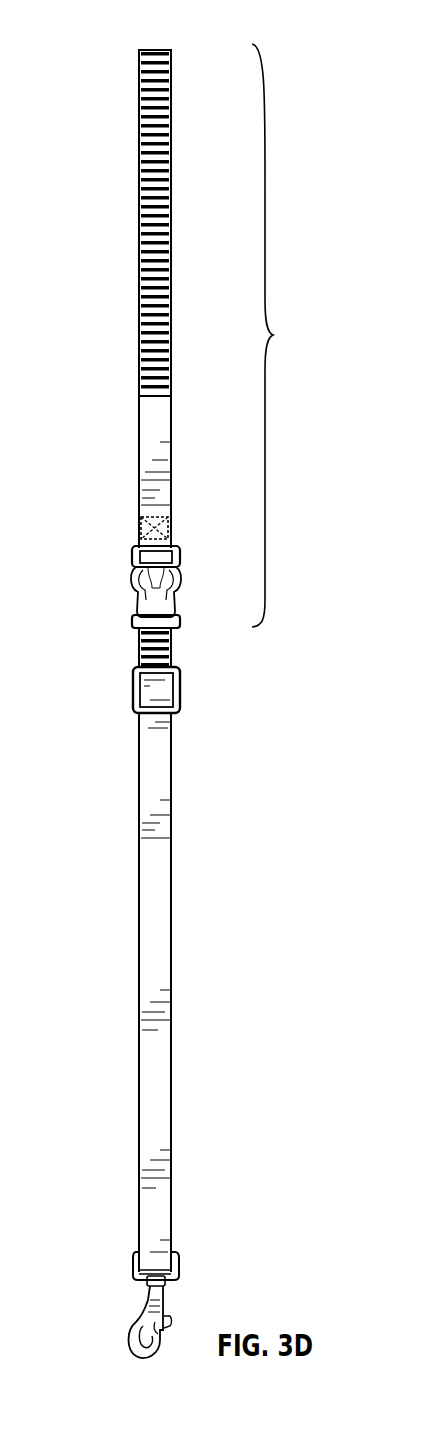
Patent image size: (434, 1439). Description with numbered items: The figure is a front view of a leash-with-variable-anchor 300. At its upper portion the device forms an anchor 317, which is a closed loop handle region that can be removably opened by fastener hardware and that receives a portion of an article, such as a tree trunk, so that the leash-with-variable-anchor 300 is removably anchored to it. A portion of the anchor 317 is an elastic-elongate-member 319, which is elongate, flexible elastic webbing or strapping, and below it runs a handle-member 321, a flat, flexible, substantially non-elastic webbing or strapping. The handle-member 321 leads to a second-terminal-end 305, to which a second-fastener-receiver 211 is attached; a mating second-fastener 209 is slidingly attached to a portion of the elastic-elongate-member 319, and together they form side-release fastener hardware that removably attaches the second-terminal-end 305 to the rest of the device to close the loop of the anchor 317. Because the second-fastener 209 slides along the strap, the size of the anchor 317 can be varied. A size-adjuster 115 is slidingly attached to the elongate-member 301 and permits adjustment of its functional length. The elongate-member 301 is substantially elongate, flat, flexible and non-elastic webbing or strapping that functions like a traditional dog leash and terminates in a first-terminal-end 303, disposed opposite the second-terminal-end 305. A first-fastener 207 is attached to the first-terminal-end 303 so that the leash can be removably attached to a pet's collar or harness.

The leash-with-variable-anchor 300 is at (125, 44).
The anchor 317 is at (275, 333).
The elastic-elongate-member 319 is at (138, 222).
The handle-member 321 is at (138, 428).
The second-terminal-end 305 is at (145, 556).
The second-fastener-receiver 211 is at (134, 561).
The second-fastener 209 is at (134, 622).
The size-adjuster 115 is at (135, 706).
The elongate-member 301 is at (138, 918).
The first-terminal-end 303 is at (148, 1265).
The first-fastener 207 is at (128, 1342).